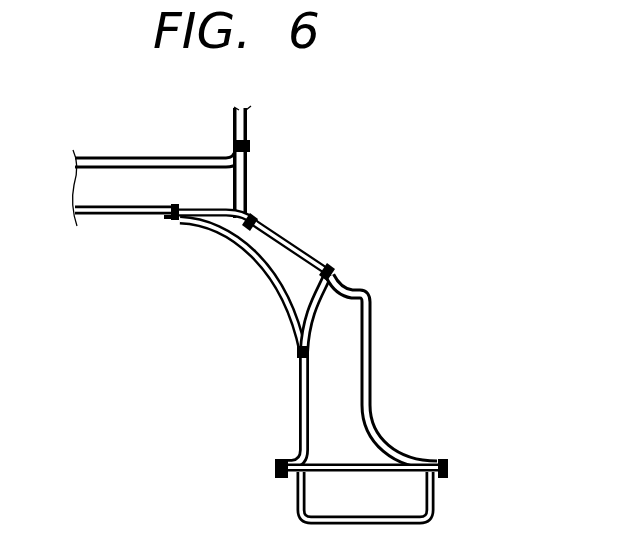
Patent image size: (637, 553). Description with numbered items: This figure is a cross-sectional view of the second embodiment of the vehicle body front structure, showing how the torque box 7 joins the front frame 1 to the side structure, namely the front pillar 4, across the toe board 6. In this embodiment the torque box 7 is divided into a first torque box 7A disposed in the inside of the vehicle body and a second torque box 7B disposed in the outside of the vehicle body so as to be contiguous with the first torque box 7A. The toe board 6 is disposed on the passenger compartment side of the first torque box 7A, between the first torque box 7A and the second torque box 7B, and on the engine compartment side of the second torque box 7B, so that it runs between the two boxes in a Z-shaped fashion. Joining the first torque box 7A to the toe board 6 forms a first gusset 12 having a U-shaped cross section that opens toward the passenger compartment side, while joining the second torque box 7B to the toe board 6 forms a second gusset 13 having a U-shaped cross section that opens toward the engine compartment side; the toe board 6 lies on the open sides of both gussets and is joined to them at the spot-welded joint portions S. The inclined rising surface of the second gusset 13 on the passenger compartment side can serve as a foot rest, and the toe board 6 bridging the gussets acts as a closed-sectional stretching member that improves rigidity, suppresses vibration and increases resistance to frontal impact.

The front frame 1 is at (124, 175).
The front pillar 4 is at (407, 493).
The toe board 6 is at (290, 234).
The torque box 7 is at (287, 334).
The first torque box 7A is at (238, 253).
The second torque box 7B is at (294, 424).
The first gusset 12 is at (270, 280).
The second gusset 13 is at (369, 387).
The joint portion S is at (251, 217).